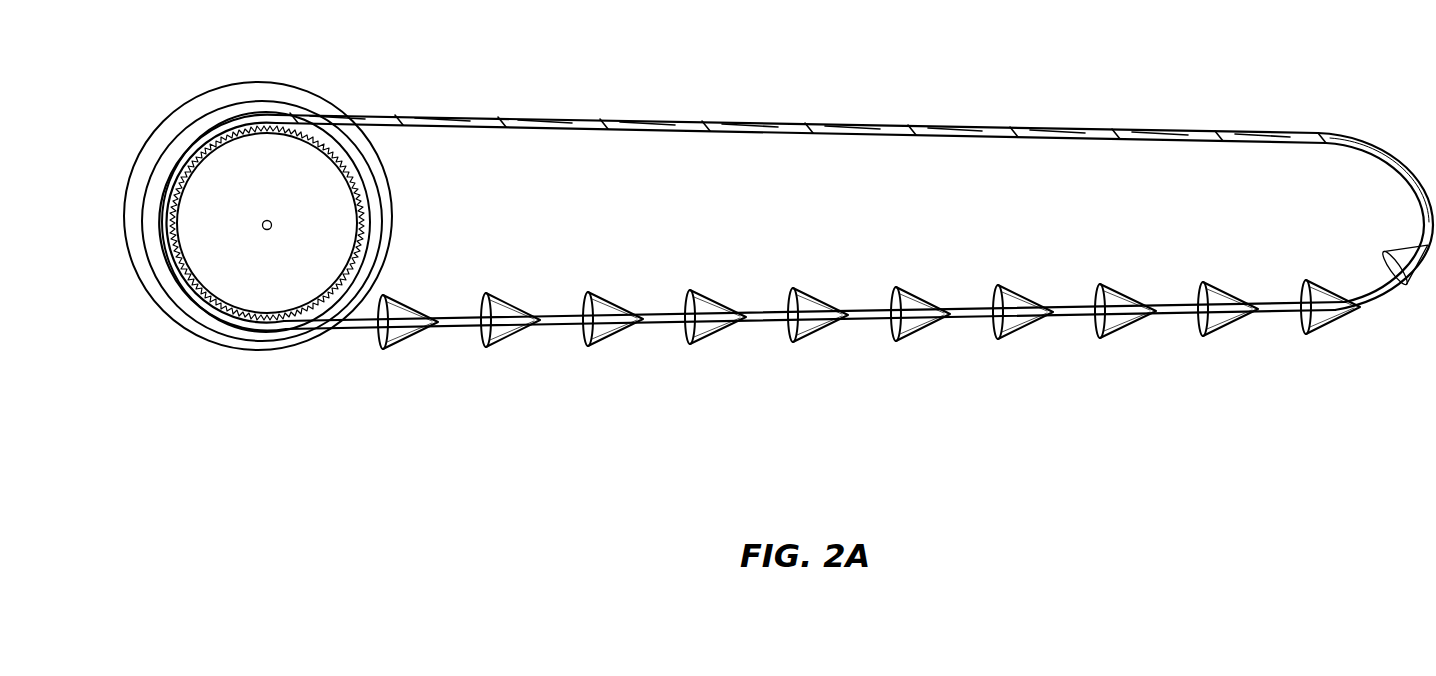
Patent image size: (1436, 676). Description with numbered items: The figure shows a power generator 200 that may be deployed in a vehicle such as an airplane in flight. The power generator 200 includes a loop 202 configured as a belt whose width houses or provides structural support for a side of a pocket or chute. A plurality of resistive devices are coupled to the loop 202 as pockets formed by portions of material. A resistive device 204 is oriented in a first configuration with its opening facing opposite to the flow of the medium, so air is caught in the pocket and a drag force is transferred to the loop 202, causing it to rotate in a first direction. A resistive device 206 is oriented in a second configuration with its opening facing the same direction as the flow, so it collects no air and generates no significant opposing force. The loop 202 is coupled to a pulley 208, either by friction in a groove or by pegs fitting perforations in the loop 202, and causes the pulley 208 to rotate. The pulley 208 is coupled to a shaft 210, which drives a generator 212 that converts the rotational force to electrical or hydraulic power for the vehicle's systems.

The power generator 200 is at (1147, 480).
The loop 202 is at (1036, 115).
The resistive device 204 is at (722, 353).
The resistive device 206 is at (796, 115).
The pulley 208 is at (338, 240).
The shaft 210 is at (270, 255).
The generator 212 is at (274, 78).